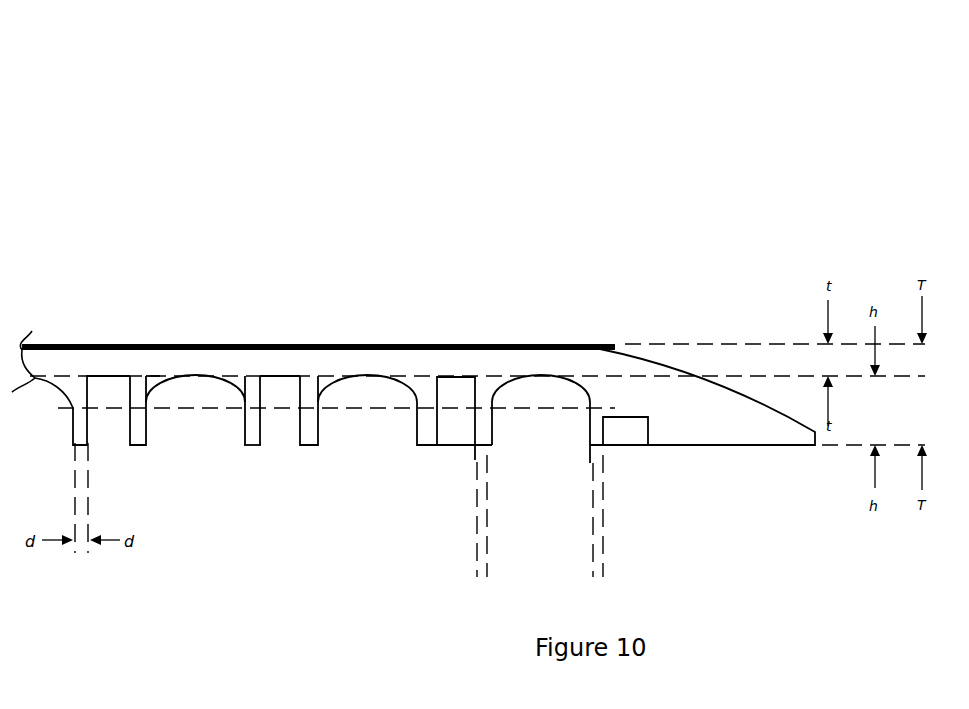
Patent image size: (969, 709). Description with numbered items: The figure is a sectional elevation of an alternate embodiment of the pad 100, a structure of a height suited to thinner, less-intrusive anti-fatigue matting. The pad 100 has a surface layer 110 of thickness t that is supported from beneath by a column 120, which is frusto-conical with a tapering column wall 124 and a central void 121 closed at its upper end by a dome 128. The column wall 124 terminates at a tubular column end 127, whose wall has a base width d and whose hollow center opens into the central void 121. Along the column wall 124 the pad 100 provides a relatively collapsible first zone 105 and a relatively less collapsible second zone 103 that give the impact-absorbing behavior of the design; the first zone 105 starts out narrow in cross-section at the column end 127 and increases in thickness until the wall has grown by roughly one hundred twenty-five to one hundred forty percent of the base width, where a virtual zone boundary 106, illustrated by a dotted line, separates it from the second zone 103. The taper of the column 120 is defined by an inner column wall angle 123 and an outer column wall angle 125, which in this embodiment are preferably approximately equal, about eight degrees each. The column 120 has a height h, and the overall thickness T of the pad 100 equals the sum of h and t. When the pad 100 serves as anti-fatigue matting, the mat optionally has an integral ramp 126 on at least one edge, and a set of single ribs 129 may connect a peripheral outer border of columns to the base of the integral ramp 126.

The pad 100 is at (131, 107).
The surface layer 110 is at (588, 360).
The column 120 is at (140, 418).
The dome 128 is at (192, 376).
The central void 121 is at (203, 395).
The column wall 124 is at (252, 427).
The column end 127 is at (257, 445).
The second zone 103 is at (413, 403).
The first zone 105 is at (422, 420).
The virtual zone boundary 106 is at (430, 400).
The outer column wall angle 125 is at (523, 527).
The inner column wall angle 123 is at (552, 529).
The integral ramp 126 is at (730, 388).
The single ribs 129 is at (627, 418).